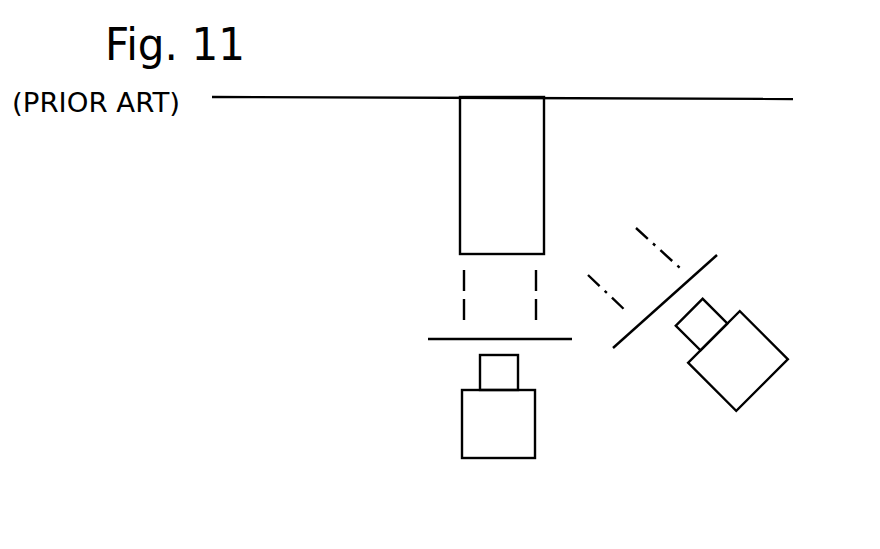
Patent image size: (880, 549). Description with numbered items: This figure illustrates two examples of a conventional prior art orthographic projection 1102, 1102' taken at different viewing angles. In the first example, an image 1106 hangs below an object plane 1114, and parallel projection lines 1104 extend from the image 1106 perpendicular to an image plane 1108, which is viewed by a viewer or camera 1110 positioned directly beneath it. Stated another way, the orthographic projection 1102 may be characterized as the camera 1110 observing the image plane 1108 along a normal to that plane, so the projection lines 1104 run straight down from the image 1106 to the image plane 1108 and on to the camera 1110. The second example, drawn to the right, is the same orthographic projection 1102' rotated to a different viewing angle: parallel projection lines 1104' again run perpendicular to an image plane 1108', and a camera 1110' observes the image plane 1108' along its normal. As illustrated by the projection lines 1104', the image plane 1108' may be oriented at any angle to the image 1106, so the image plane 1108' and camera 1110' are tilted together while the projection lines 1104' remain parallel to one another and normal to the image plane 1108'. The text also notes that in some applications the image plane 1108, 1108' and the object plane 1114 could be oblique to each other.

The object plane 1114 is at (250, 98).
The image 1106 is at (467, 155).
The projection lines 1104 is at (443, 293).
The image plane 1108 is at (513, 378).
The camera 1110 is at (498, 441).
The orthographic projection 1102 is at (341, 376).
The orthographic projection 1102' is at (781, 183).
The projection lines 1104' is at (634, 241).
The image plane 1108' is at (719, 301).
The camera 1110' is at (733, 377).